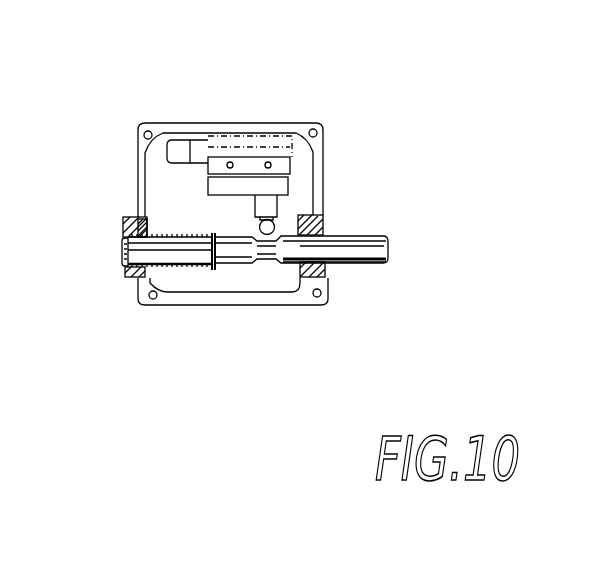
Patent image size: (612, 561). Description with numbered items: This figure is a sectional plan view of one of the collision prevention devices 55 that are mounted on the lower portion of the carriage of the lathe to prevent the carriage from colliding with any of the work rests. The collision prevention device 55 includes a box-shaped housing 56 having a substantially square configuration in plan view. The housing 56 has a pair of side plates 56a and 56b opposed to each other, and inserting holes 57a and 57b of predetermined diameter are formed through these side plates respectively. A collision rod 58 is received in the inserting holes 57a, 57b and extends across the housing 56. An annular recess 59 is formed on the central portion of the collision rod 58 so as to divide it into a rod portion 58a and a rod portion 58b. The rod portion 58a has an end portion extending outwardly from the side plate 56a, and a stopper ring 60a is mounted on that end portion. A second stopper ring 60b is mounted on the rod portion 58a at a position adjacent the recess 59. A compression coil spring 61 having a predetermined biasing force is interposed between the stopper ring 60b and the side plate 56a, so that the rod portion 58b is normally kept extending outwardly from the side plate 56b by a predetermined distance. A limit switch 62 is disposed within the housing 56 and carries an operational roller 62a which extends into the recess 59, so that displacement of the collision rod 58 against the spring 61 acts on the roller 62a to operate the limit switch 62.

The collision prevention device 55 is at (284, 90).
The housing 56 is at (337, 146).
The side plate 56a is at (143, 188).
The side plate 56b is at (328, 182).
The inserting hole 57a is at (123, 268).
The inserting hole 57b is at (350, 262).
The collision rod 58 is at (398, 236).
The rod portion 58a is at (175, 250).
The rod portion 58b is at (362, 251).
The annular recess 59 is at (270, 243).
The stopper ring 60a is at (122, 252).
The stopper ring 60b is at (212, 232).
The compression coil spring 61 is at (200, 264).
The limit switch 62 is at (223, 145).
The operational roller 62a is at (323, 219).